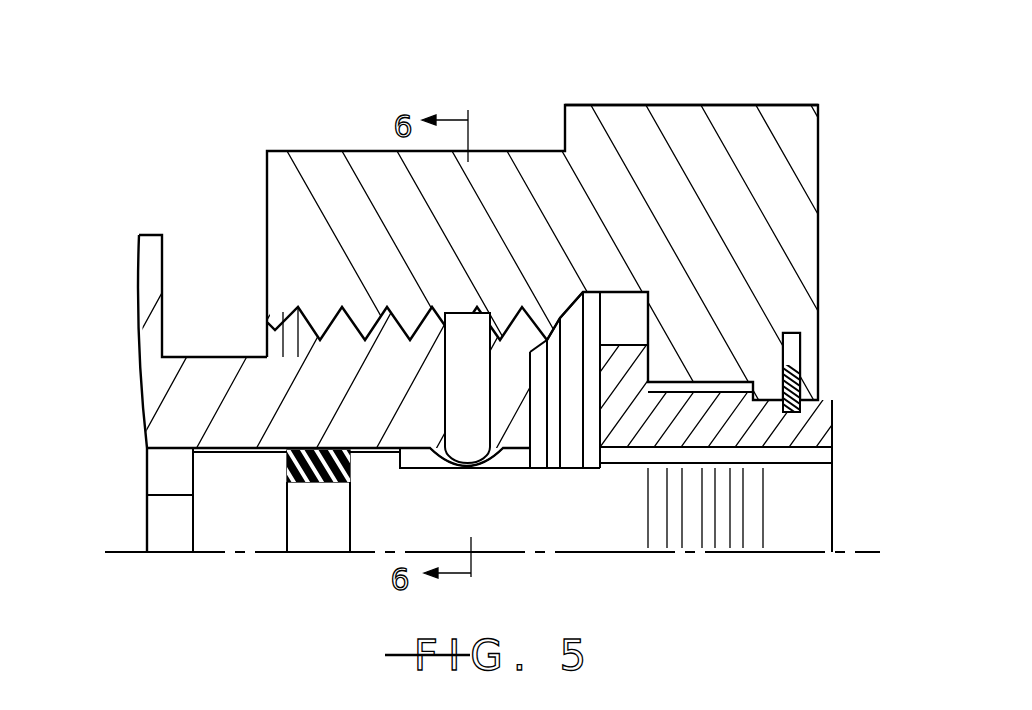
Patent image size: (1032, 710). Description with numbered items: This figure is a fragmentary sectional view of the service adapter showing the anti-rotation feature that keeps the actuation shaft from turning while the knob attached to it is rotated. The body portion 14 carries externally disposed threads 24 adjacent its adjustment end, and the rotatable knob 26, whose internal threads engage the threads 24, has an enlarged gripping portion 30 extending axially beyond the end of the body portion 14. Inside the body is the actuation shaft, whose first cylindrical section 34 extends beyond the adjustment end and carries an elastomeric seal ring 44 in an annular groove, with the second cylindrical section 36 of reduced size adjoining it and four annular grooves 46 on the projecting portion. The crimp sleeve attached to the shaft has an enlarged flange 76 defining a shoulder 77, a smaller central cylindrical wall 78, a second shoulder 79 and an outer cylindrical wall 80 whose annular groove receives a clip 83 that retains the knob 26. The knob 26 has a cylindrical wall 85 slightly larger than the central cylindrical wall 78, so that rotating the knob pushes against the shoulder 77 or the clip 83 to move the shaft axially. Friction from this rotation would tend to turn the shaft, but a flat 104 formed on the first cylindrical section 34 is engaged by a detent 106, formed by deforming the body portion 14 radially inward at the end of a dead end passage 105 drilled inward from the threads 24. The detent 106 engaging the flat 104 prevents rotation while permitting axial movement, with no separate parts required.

The body portion 14 is at (200, 382).
The externally disposed threads 24 is at (308, 372).
The rotatable knob 26 is at (818, 160).
The enlarged gripping portion 30 is at (633, 105).
The first cylindrical section 34 is at (375, 530).
The second cylindrical section 36 is at (166, 530).
The elastomeric seal ring 44 is at (308, 488).
The annular grooves 46 is at (753, 492).
The enlarged flange 76 is at (548, 335).
The shoulder 77 is at (600, 290).
The central cylindrical wall 78 is at (662, 362).
The second shoulder 79 is at (740, 428).
The outer cylindrical wall 80 is at (812, 398).
The clip 83 is at (792, 333).
The cylindrical wall 85 is at (722, 382).
The flat 104 is at (628, 458).
The dead end passage 105 is at (460, 376).
The detent 106 is at (482, 468).